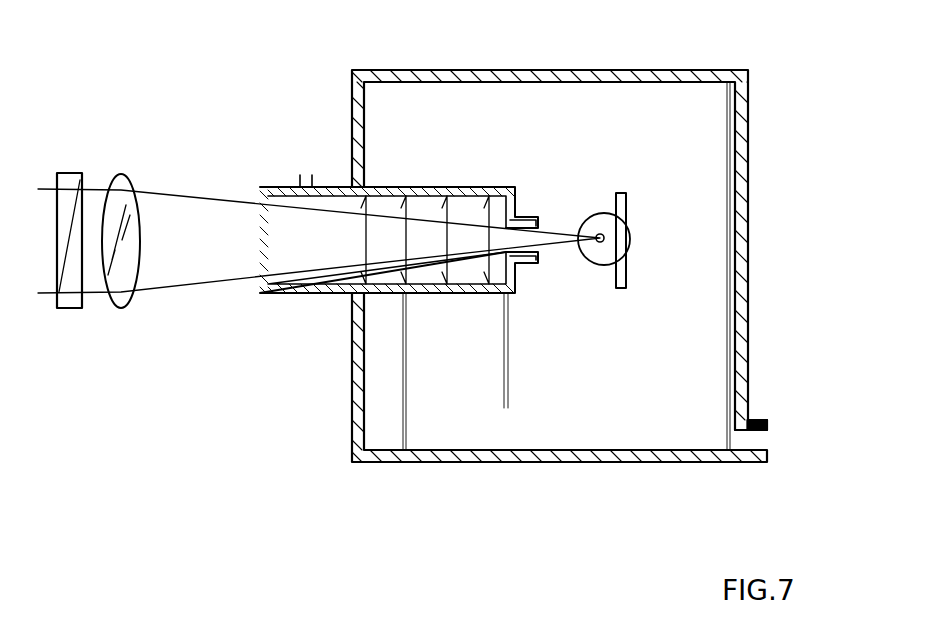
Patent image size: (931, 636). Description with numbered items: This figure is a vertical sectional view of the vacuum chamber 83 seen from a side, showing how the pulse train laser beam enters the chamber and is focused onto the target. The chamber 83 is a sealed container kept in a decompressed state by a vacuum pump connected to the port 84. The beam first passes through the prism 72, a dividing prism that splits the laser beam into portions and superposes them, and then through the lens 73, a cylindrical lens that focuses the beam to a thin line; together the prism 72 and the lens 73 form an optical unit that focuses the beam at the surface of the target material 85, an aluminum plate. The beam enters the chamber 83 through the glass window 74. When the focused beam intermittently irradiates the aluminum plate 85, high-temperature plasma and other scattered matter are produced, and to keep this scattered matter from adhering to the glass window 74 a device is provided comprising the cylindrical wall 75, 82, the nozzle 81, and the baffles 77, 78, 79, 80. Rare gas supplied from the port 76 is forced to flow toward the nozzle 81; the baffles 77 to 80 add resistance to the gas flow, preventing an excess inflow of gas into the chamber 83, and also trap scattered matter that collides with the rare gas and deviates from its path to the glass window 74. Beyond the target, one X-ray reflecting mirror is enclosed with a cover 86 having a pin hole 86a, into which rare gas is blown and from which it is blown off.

The prism 72 is at (67, 172).
The lens 73 is at (118, 175).
The glass window 74 is at (260, 228).
The cylindrical wall 75 is at (303, 294).
The port 76 is at (307, 178).
The baffle 77 is at (367, 200).
The baffle 78 is at (407, 200).
The baffle 79 is at (448, 200).
The baffle 80 is at (490, 200).
The nozzle 81 is at (530, 216).
The cylindrical wall 82 is at (428, 295).
The vacuum chamber 83 is at (527, 68).
The port 84 is at (750, 428).
The target material 85 is at (630, 208).
The cover 86 is at (632, 240).
The pin hole 86a is at (600, 233).